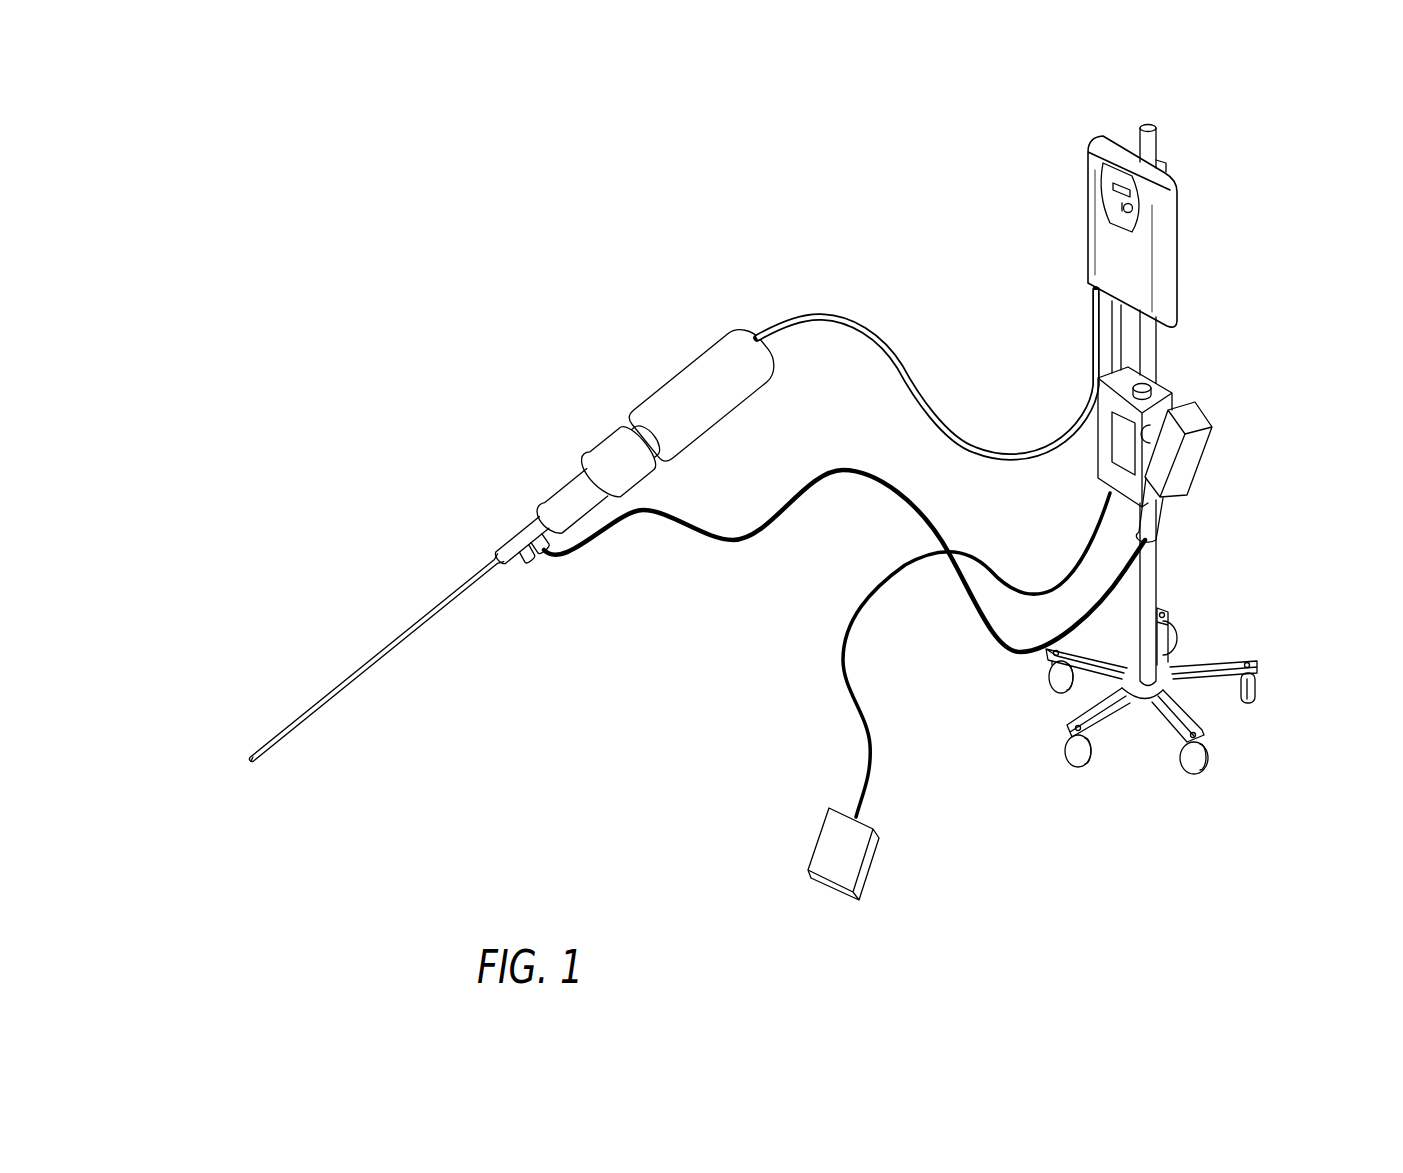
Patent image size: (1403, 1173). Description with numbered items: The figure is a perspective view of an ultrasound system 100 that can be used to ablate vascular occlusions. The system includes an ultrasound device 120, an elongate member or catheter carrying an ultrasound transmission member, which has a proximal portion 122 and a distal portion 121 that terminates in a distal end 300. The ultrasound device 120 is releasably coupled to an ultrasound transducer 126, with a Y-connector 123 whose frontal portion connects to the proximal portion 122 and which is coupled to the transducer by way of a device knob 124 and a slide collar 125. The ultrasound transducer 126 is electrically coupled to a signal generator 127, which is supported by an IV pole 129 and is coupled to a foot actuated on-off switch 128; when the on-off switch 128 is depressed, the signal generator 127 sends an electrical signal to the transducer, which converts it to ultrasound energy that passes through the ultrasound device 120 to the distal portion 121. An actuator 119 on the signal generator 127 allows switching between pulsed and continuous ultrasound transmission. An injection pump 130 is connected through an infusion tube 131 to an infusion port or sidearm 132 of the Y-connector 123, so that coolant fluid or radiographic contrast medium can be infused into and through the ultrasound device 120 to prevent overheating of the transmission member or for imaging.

The ultrasound system 100 is at (578, 194).
The actuator 119 is at (1115, 197).
The ultrasound device 120 is at (428, 382).
The distal portion 121 is at (362, 654).
The proximal portion 122 is at (510, 532).
The Y-connector 123 is at (522, 566).
The device knob 124 is at (555, 477).
The slide collar 125 is at (597, 436).
The ultrasound transducer 126 is at (673, 354).
The signal generator 127 is at (1158, 250).
The foot actuated on-off switch 128 is at (837, 847).
The IV pole 129 is at (1148, 116).
The injection pump 130 is at (1214, 468).
The infusion tube 131 is at (879, 480).
The infusion port or sidearm 132 is at (566, 569).
The distal end 300 is at (257, 772).